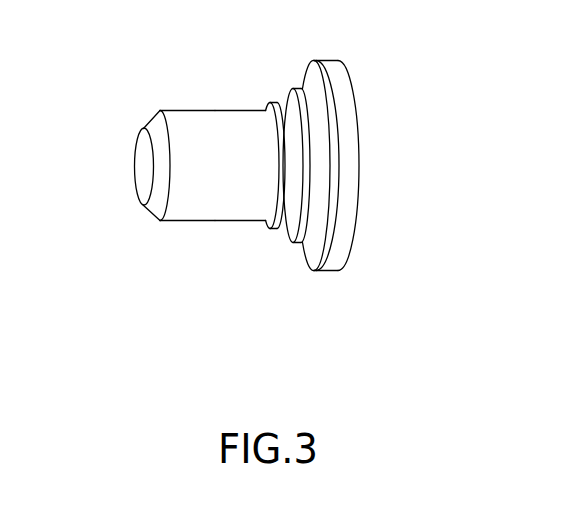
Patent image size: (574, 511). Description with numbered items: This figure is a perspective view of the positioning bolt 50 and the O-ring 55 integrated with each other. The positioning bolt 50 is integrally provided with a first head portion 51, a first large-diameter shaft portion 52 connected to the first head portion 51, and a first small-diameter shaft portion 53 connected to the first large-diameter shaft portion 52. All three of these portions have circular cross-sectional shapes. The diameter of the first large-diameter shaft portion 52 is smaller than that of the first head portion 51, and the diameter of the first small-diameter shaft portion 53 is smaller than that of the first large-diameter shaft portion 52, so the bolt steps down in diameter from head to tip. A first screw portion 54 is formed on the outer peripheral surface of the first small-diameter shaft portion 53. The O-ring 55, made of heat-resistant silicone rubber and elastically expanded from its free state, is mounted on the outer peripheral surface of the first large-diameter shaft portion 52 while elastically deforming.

The positioning bolt 50 is at (207, 84).
The first head portion 51 is at (345, 97).
The first large-diameter shaft portion 52 is at (277, 102).
The first small-diameter shaft portion 53 is at (185, 221).
The first screw portion 54 is at (240, 221).
The O-ring 55 is at (311, 167).